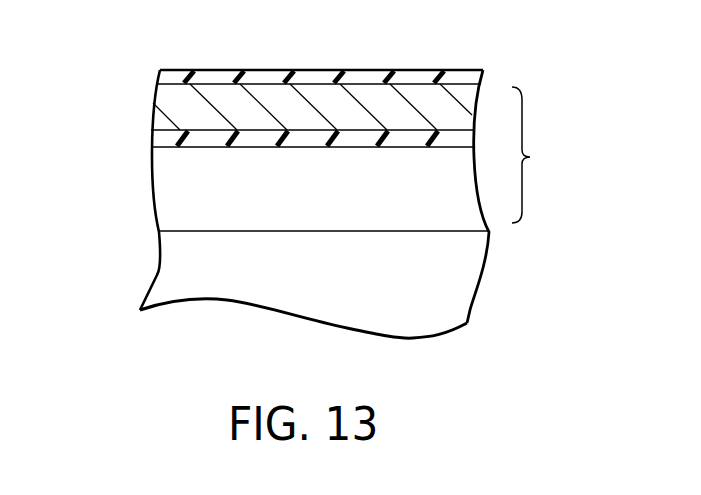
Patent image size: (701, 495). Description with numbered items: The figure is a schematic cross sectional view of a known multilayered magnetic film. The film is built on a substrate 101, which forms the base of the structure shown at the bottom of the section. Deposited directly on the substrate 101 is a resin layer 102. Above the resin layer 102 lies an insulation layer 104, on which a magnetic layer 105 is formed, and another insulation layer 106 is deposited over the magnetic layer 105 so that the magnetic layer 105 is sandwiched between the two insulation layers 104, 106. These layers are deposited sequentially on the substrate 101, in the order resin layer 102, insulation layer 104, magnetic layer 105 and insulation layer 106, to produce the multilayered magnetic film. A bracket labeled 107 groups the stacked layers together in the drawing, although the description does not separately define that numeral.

The substrate 101 is at (165, 272).
The resin layer 102 is at (167, 193).
The insulation layer 104 is at (153, 140).
The magnetic layer 105 is at (148, 115).
The insulation layer 106 is at (160, 80).
The layered structure 107 is at (545, 155).